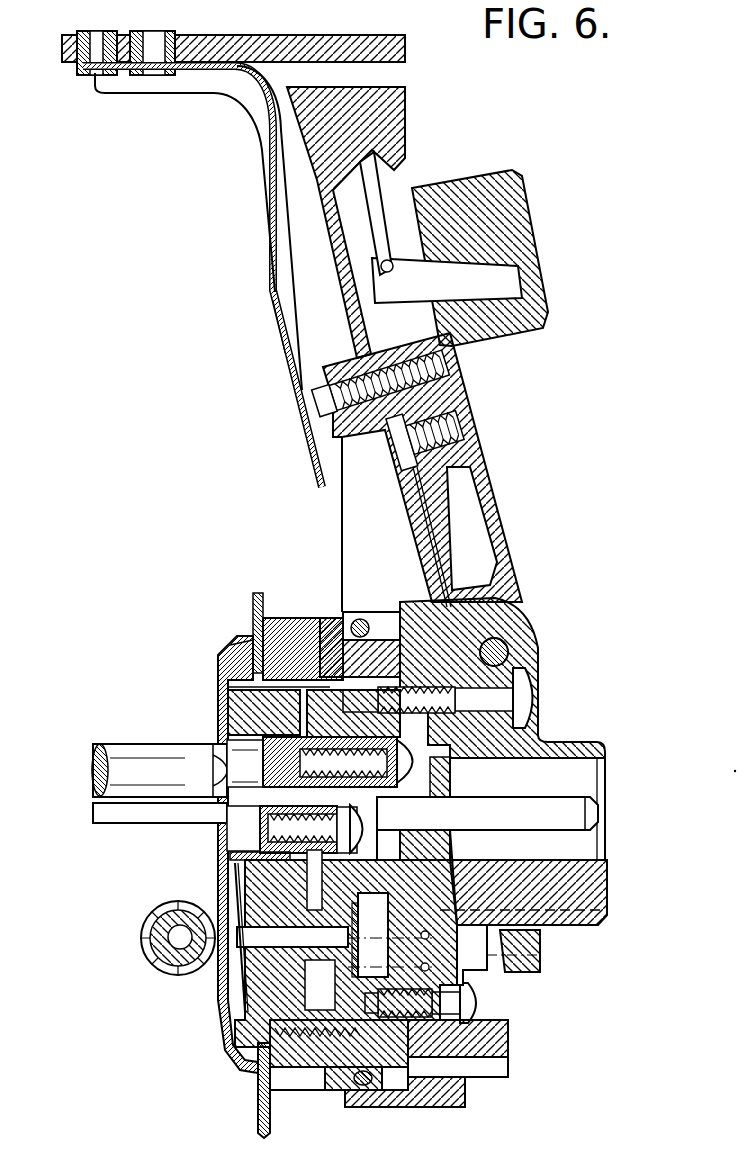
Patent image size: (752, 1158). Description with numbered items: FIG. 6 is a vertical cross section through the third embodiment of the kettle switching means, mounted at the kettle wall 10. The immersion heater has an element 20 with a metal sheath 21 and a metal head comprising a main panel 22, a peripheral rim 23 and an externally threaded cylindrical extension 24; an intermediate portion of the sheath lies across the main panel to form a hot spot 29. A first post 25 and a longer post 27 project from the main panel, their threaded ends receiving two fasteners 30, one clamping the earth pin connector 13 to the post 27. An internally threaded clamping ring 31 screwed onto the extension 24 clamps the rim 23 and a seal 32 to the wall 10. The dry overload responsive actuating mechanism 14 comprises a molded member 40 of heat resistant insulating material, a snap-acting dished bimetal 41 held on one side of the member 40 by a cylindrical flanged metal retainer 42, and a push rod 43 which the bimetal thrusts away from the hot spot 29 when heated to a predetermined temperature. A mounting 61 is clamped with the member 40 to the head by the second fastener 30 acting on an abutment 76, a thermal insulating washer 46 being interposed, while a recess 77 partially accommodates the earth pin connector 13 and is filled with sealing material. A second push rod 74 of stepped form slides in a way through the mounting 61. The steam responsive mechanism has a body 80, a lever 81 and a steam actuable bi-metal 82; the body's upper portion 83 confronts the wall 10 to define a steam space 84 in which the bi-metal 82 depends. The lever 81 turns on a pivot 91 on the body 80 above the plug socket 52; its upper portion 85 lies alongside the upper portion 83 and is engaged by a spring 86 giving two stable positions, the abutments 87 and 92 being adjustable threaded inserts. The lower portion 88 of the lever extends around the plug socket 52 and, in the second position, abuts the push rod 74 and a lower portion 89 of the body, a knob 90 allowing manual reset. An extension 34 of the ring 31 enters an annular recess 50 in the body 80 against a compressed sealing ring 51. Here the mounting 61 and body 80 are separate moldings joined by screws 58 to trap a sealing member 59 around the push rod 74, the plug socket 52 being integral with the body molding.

The wall 10 is at (258, 1120).
The earth pin connector 13 is at (592, 816).
The dry overload responsive actuating mechanism 14 is at (235, 1025).
The element 20 is at (170, 950).
The metal sheath 21 is at (148, 936).
The main panel 22 is at (218, 726).
The peripheral rim 23 is at (222, 652).
The externally threaded cylindrical extension 24 is at (262, 632).
The first post 25 is at (245, 826).
The longer post 27 is at (245, 763).
The hot spot 29 is at (230, 965).
The fasteners 30 is at (420, 768).
The clamping ring 31 is at (308, 1075).
The seal 32 is at (240, 636).
The extension 34 is at (368, 1087).
The molded member 40 is at (242, 703).
The bimetal 41 is at (232, 1000).
The cylindrical flanged metal retainer 42 is at (240, 857).
The push rod 43 is at (258, 905).
The thermal insulating washer 46 is at (382, 800).
The annular recess 50 is at (385, 610).
The sealing ring 51 is at (336, 1078).
The plug socket 52 is at (578, 788).
The screws 58 is at (536, 695).
The sealing member 59 is at (430, 968).
The mounting 61 is at (334, 620).
The second push rod 74 is at (530, 962).
The abutment 76 is at (350, 934).
The recess 77 is at (440, 832).
The body 80 is at (520, 610).
The lever 81 is at (497, 585).
The steam actuable bi-metal 82 is at (280, 308).
The upper portion 83 is at (340, 250).
The steam space 84 is at (248, 150).
The upper portion 85 is at (454, 394).
The spring 86 is at (380, 210).
The abutment 87 is at (468, 428).
The lower portion 88 is at (525, 947).
The lower portion 89 is at (500, 1044).
The knob 90 is at (502, 243).
The pivot 91 is at (510, 646).
The abutment 92 is at (320, 405).